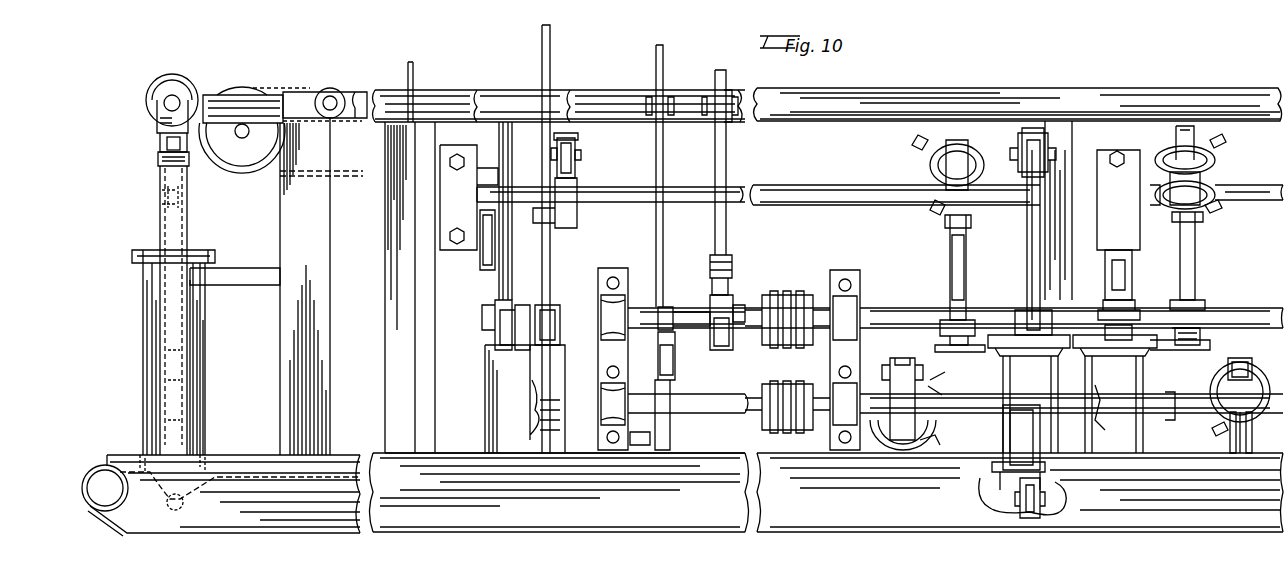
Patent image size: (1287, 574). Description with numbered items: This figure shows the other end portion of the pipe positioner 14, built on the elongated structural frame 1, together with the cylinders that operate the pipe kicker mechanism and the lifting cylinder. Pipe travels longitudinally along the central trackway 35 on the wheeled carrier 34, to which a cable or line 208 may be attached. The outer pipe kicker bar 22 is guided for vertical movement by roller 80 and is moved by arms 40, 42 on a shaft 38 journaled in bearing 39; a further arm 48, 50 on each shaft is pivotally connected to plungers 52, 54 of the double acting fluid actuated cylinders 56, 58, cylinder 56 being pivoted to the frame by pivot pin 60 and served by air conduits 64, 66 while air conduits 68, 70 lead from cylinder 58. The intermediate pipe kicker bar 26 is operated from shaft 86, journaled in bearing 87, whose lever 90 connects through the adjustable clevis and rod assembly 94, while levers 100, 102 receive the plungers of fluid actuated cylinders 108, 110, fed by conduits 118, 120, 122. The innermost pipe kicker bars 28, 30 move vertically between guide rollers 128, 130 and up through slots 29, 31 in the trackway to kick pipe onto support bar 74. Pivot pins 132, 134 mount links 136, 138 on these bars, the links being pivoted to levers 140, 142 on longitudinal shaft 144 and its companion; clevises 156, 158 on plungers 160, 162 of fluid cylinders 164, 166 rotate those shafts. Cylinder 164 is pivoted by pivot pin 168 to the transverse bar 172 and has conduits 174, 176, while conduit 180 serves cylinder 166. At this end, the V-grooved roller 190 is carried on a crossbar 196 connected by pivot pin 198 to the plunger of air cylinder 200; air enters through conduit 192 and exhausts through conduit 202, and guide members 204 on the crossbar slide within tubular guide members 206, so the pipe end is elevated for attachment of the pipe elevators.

The elongated structural frame 1 is at (1045, 535).
The pipe positioner 14 is at (1012, 92).
The pipe kicker bar 22 is at (742, 62).
The intermediate pipe kicker bar 26 is at (668, 66).
The innermost pipe kicker bar 28 is at (550, 48).
The slot 29 is at (570, 130).
The innermost pipe kicker bar 30 is at (512, 118).
The slot 31 is at (500, 118).
The wheeled carrier 34 is at (330, 88).
The central trackway 35 is at (978, 92).
The shaft 38 is at (1232, 306).
The bearing 39 is at (628, 280).
The arm 40 is at (733, 315).
The arm 42 is at (733, 340).
The arm 48 is at (1180, 300).
The arm 50 is at (975, 315).
The plunger 52 is at (1196, 255).
The plunger 54 is at (950, 275).
The fluid actuated cylinder 56 is at (1205, 180).
The fluid actuated cylinder 58 is at (935, 162).
The pivot pin 60 is at (1210, 138).
The air conduit 64 is at (1216, 145).
The air conduit 66 is at (1215, 208).
The air conduit 68 is at (935, 205).
The air conduit 70 is at (918, 145).
The support bar 74 is at (413, 72).
The roller 80 is at (740, 100).
The shaft 86 is at (1210, 412).
The bearing 87 is at (650, 438).
The lever 90 is at (675, 370).
The adjustable clevis and rod assembly 94 is at (670, 340).
The lever 100 is at (1238, 362).
The lever 102 is at (922, 372).
The fluid actuated cylinder 108 is at (1228, 362).
The fluid actuated cylinder 110 is at (935, 425).
The conduit 118 is at (1214, 430).
The conduit 120 is at (940, 388).
The conduit 122 is at (940, 445).
The guide rollers 128 is at (550, 305).
The rollers 130 is at (520, 305).
The pivot pin 132 is at (581, 155).
The pivot pin 134 is at (488, 318).
The link 136 is at (577, 182).
The link 138 is at (483, 268).
The lever 140 is at (578, 137).
The lever 142 is at (475, 224).
The longitudinal shaft 144 is at (848, 185).
The clevis 156 is at (1048, 135).
The clevis 158 is at (1105, 250).
The plunger 160 is at (1027, 235).
The plunger 162 is at (1108, 300).
The fluid cylinder 164 is at (1045, 385).
The fluid cylinder 166 is at (1125, 385).
The pivot pin 168 is at (1050, 495).
The transverse bar 172 is at (985, 484).
The conduit 174 is at (1010, 440).
The conduit 176 is at (960, 352).
The conduit 180 is at (1180, 350).
The roller 190 is at (178, 78).
The conduit 192 is at (132, 455).
The crossbar 196 is at (158, 142).
The pivot pin 198 is at (163, 172).
The air cylinder 200 is at (150, 383).
The conduit 202 is at (132, 262).
The guide member 204 is at (158, 158).
The tubular guide member 206 is at (165, 196).
The cable or line 208 is at (300, 88).